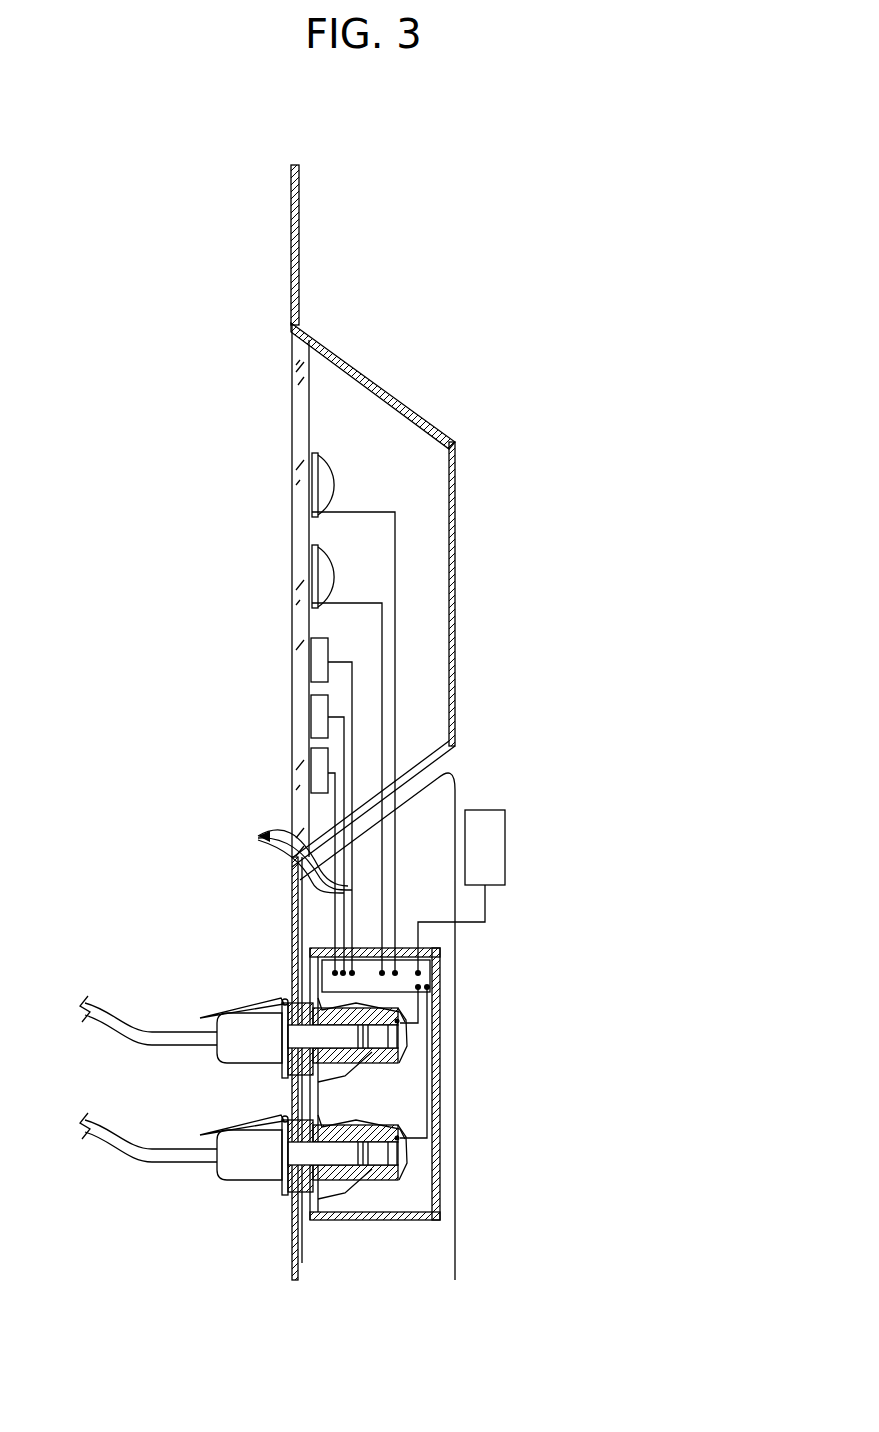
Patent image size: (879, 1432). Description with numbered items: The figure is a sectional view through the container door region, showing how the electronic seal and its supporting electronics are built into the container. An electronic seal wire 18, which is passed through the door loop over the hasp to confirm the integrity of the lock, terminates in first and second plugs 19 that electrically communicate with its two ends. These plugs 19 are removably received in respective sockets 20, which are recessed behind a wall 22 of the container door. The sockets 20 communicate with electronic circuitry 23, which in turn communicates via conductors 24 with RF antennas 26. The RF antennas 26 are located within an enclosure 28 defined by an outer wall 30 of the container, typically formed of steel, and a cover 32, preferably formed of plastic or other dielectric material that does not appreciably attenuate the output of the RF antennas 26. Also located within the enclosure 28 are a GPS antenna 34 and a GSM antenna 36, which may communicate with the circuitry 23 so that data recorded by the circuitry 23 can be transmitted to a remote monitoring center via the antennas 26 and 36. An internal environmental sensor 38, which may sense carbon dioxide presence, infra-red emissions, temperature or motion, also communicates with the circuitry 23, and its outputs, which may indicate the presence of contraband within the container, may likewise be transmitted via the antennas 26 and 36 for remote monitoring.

The electronic seal wire 18 is at (122, 1030).
The plug 19 is at (214, 1066).
The socket 20 is at (368, 1052).
The wall 22 is at (292, 940).
The electronic circuitry 23 is at (434, 975).
The conductors 24 is at (290, 859).
The RF antennas 26 is at (318, 770).
The enclosure 28 is at (342, 395).
The outer wall 30 is at (450, 508).
The cover 32 is at (305, 423).
The GPS antenna 34 is at (328, 480).
The GSM antenna 36 is at (328, 572).
The internal environmental sensor 38 is at (490, 815).